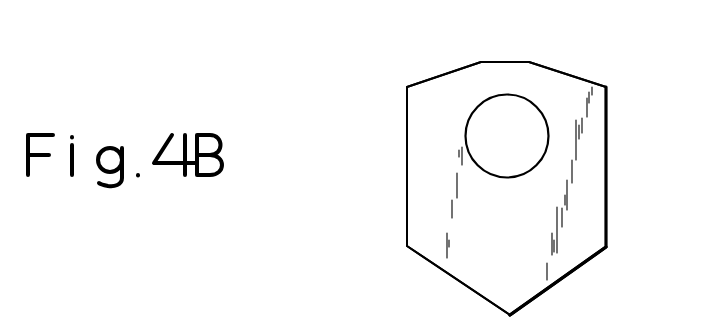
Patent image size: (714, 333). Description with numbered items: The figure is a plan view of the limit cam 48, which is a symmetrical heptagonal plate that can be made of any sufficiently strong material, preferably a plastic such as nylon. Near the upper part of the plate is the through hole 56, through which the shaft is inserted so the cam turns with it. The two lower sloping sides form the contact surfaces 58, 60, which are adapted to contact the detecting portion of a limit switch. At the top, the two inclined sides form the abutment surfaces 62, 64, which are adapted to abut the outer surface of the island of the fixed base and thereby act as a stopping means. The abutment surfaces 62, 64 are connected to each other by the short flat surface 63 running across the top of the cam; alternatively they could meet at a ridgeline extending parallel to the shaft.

The limit cam 48 is at (377, 121).
The through hole 56 is at (542, 134).
The contact surface 58 is at (442, 270).
The contact surface 60 is at (587, 263).
The abutment surface 62 is at (430, 78).
The surface 63 is at (507, 62).
The abutment surface 64 is at (568, 73).